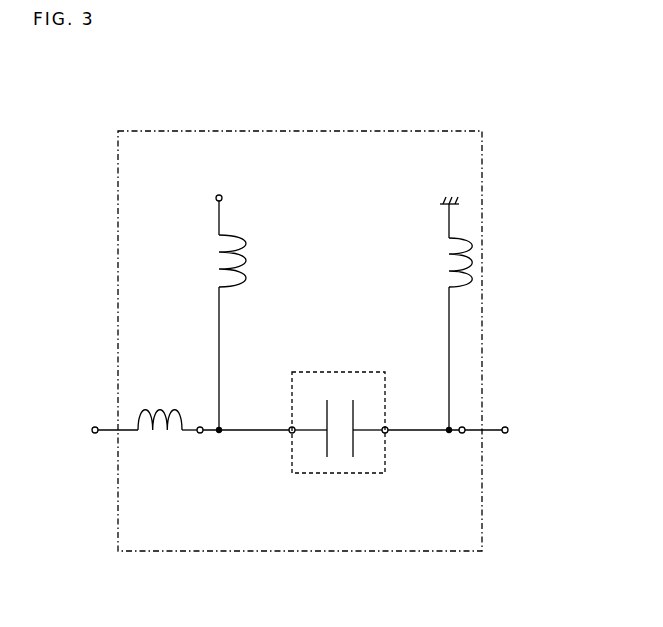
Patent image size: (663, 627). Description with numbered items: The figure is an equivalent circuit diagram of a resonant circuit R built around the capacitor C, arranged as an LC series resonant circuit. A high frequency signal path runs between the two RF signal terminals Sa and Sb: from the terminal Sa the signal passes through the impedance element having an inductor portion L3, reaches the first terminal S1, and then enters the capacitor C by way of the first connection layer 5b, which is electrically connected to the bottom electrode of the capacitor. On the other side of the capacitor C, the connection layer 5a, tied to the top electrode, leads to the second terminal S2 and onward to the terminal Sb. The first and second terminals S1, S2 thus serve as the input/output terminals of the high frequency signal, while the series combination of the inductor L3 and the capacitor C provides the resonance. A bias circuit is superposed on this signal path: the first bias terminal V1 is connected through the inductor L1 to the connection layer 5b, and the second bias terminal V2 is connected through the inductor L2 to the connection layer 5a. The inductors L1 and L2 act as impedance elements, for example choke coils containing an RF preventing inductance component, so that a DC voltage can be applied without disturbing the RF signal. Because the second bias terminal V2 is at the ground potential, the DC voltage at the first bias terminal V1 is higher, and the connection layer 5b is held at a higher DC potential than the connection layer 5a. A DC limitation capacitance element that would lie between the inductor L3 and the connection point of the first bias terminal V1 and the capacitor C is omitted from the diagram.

The resonant circuit R is at (301, 130).
The first bias terminal V1 is at (229, 201).
The second bias terminal V2 is at (478, 215).
The inductor L1 is at (260, 332).
The inductor L2 is at (484, 334).
The impedance element having an inductor portion L3 is at (167, 413).
The RF signal terminal Sa is at (95, 431).
The RF signal terminal Sb is at (529, 430).
The first terminal S1 is at (243, 444).
The second terminal S2 is at (471, 446).
The connection layer 5a is at (387, 433).
The first connection layer 5b is at (290, 433).
The capacitor C is at (366, 474).